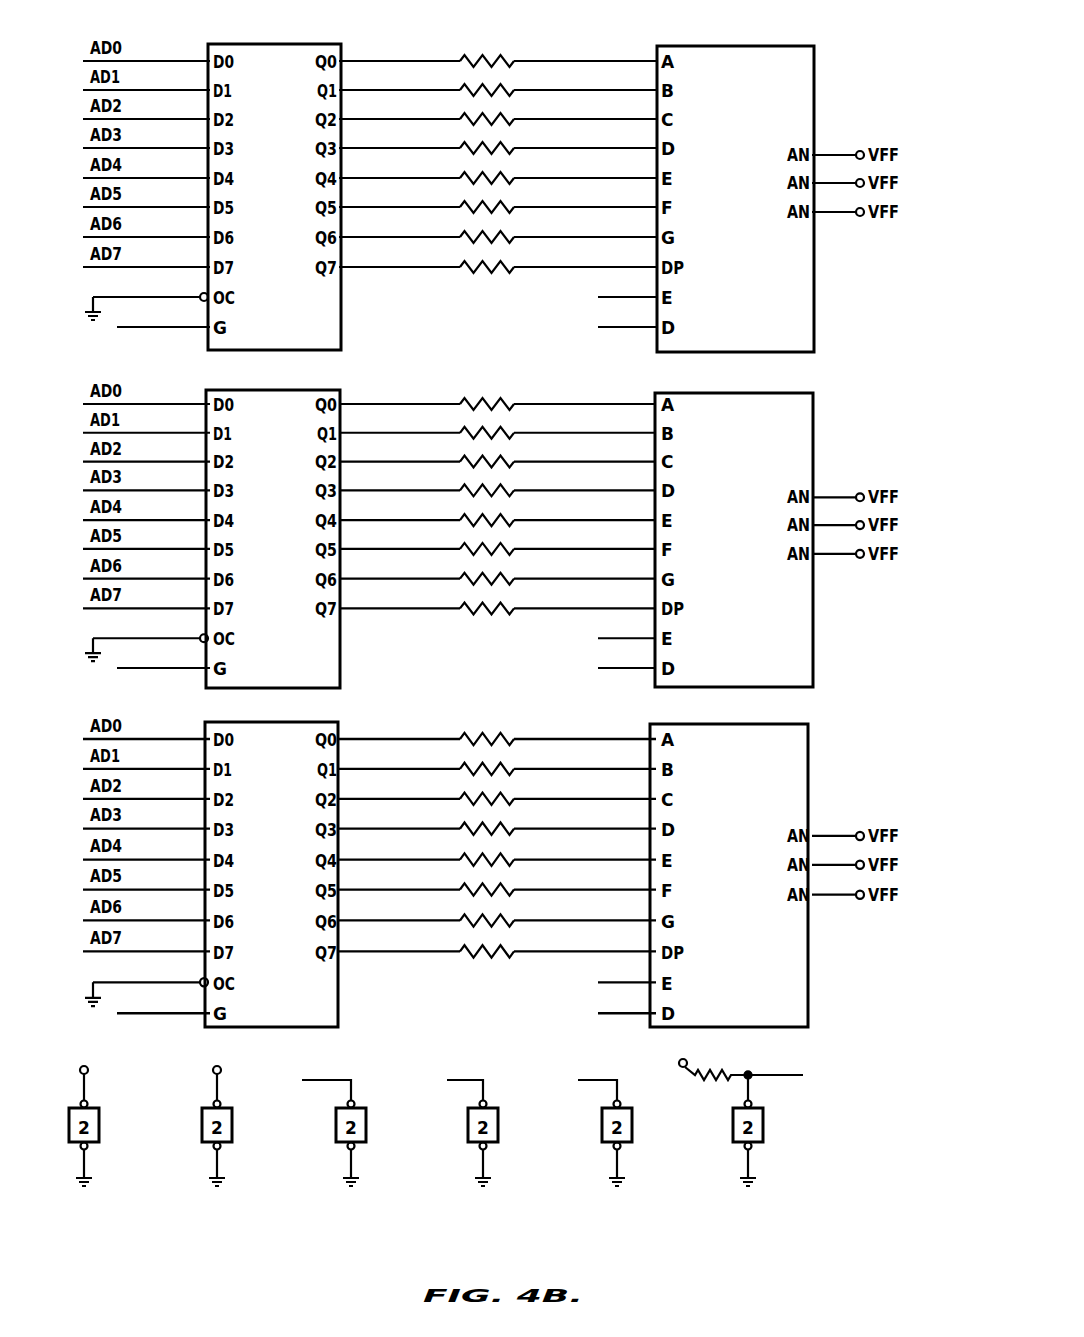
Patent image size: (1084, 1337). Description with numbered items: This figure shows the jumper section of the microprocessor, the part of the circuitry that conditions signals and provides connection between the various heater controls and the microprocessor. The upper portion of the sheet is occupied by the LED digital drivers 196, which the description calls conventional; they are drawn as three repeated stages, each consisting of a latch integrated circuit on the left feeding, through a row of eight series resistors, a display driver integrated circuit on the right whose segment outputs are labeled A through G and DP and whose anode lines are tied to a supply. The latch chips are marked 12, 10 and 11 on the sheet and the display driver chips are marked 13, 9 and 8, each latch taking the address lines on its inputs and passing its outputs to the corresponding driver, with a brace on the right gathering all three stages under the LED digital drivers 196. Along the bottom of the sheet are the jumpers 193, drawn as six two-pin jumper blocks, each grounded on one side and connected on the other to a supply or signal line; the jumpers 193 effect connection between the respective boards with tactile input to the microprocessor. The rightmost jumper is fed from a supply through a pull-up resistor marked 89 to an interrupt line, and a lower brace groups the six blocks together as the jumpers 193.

The LED digital drivers 196 is at (518, 524).
The jumpers 193 is at (442, 1141).
The latch U12 12 is at (274, 186).
The display driver U13 13 is at (735, 188).
The latch U10 10 is at (273, 528).
The display driver U9 9 is at (734, 529).
The latch U11 11 is at (271, 863).
The display driver U8 8 is at (729, 864).
The resistor R89 89 is at (744, 1074).